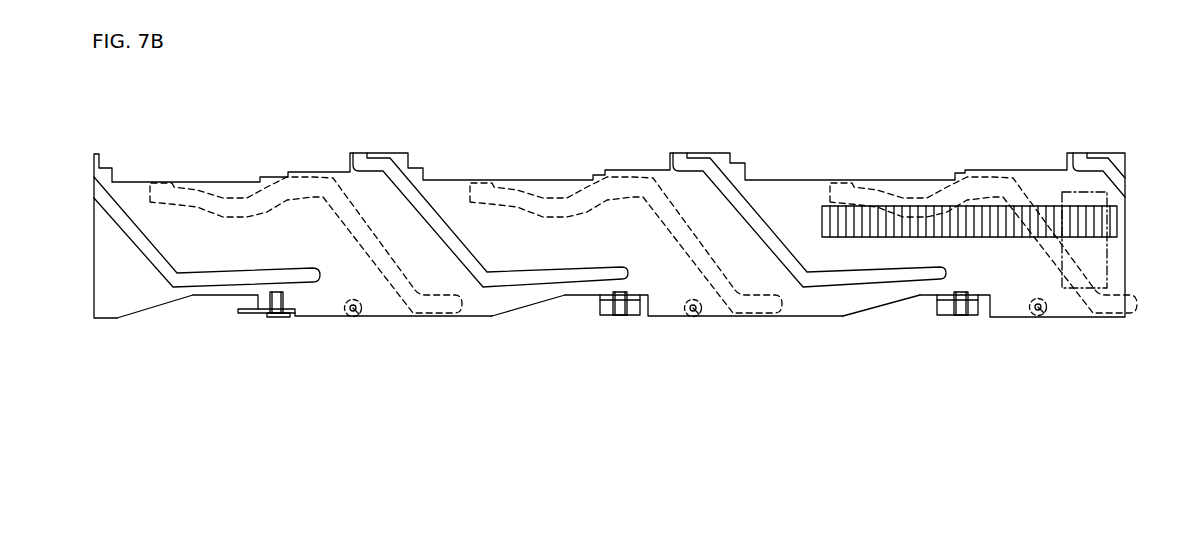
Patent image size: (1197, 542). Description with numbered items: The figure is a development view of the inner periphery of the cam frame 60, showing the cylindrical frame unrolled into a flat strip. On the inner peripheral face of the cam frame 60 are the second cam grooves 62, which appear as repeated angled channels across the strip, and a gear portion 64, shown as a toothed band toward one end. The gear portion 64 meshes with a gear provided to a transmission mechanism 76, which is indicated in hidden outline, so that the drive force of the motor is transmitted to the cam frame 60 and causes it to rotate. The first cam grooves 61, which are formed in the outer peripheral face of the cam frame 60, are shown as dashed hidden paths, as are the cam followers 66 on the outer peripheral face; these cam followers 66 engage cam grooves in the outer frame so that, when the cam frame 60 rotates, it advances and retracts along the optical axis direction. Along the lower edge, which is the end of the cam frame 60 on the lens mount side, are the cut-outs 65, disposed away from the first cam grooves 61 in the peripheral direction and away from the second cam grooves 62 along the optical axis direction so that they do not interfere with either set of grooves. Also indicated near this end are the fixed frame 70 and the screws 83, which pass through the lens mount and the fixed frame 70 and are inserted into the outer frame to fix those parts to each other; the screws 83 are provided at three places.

The cam frame 60 is at (255, 130).
The first cam grooves 61 is at (252, 195).
The second cam grooves 62 is at (395, 175).
The gear portion 64 is at (1112, 222).
The cut-outs 65 is at (212, 310).
The cam followers 66 is at (360, 313).
The fixed frame 70 is at (262, 315).
The transmission mechanism 76 is at (1102, 257).
The screws 83 is at (287, 315).